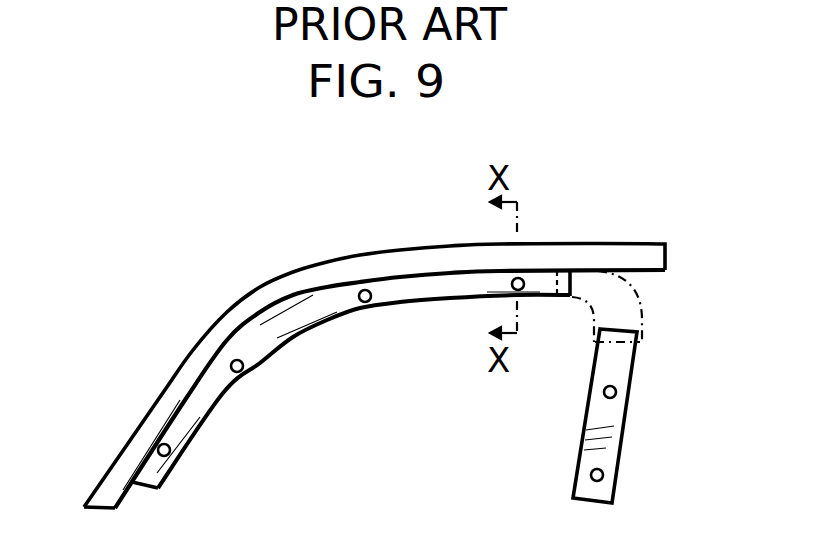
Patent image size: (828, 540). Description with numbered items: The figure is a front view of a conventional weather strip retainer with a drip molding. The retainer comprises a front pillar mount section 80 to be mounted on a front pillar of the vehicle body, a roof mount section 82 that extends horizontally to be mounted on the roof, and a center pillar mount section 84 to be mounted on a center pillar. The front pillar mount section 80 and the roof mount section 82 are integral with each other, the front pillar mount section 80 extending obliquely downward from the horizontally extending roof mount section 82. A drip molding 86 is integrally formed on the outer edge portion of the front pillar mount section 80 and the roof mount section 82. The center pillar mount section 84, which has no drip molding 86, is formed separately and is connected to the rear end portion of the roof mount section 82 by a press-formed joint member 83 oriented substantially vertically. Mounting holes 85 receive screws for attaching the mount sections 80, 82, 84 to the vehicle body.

The front pillar mount section 80 is at (220, 383).
The roof mount section 82 is at (422, 290).
The joint member 83 is at (635, 298).
The center pillar mount section 84 is at (613, 418).
The mounting holes 85 is at (365, 303).
The drip molding 86 is at (288, 295).